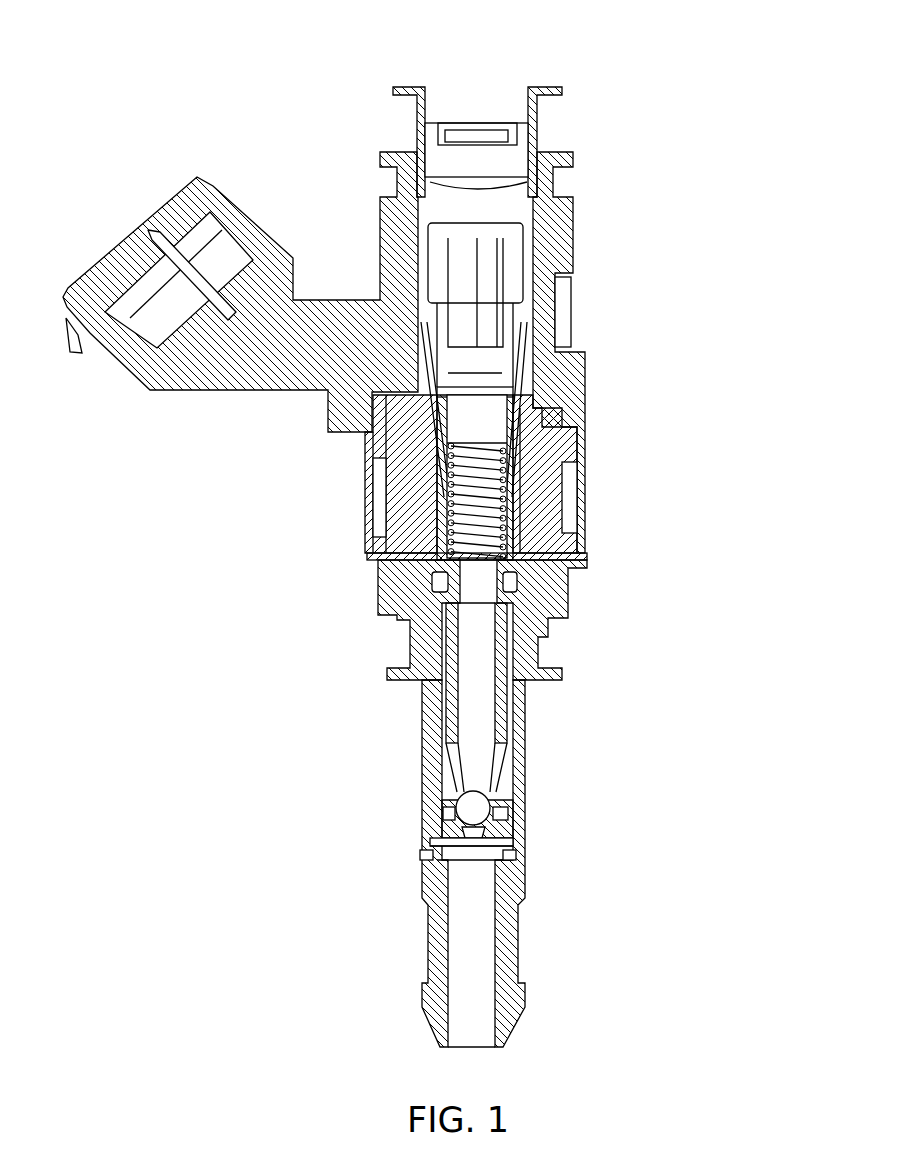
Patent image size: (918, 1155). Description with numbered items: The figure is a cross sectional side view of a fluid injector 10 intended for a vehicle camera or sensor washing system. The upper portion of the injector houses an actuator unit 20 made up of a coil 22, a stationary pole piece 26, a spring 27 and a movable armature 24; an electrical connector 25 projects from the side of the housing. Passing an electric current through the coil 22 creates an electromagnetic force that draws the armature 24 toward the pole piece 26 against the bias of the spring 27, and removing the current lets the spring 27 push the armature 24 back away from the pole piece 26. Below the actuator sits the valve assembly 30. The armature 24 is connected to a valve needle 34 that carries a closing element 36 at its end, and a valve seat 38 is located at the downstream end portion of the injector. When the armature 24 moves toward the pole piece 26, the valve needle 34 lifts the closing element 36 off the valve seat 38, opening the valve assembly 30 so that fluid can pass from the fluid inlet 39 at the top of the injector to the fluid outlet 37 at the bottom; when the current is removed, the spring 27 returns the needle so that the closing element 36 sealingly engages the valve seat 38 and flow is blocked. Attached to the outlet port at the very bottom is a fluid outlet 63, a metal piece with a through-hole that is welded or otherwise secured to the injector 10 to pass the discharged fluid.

The fluid injector 10 is at (402, 525).
The actuator unit 20 is at (383, 303).
The coil 22 is at (543, 475).
The armature 24 is at (543, 550).
The electrical connector 25 is at (155, 210).
The stationary pole piece 26 is at (445, 500).
The spring 27 is at (427, 533).
The valve assembly 30 is at (510, 803).
The valve needle 34 is at (462, 670).
The closing element 36 is at (460, 800).
The fluid outlet 37 is at (503, 849).
The valve seat 38 is at (500, 827).
The fluid inlet 39 is at (478, 95).
The fluid outlet 63 is at (507, 938).